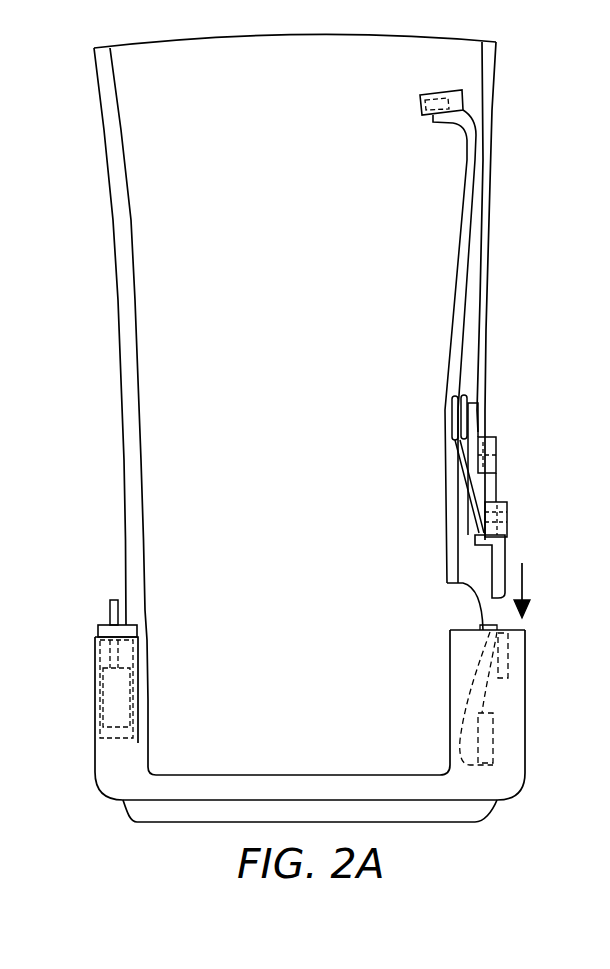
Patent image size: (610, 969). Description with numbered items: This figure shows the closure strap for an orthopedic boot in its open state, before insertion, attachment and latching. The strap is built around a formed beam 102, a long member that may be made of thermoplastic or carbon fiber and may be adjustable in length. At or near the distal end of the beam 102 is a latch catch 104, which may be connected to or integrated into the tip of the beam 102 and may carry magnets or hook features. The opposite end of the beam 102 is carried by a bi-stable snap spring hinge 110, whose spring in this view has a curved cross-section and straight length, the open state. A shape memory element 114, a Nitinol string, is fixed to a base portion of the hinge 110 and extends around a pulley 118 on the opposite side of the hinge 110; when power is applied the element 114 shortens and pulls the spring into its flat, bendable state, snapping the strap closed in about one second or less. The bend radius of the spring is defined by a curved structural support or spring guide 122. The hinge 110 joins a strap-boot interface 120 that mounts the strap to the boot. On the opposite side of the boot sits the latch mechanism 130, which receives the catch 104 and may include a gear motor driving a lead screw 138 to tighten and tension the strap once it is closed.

The formed beam 102 is at (480, 302).
The latch catch 104 is at (420, 95).
The bi-stable snap spring hinge 110 is at (508, 460).
The shape memory element 114 is at (470, 480).
The pulley 118 is at (448, 404).
The strap-boot interface 120 is at (502, 563).
The spring guide 122 is at (462, 603).
The latch mechanism 130 is at (113, 707).
The lead screw 138 is at (112, 648).